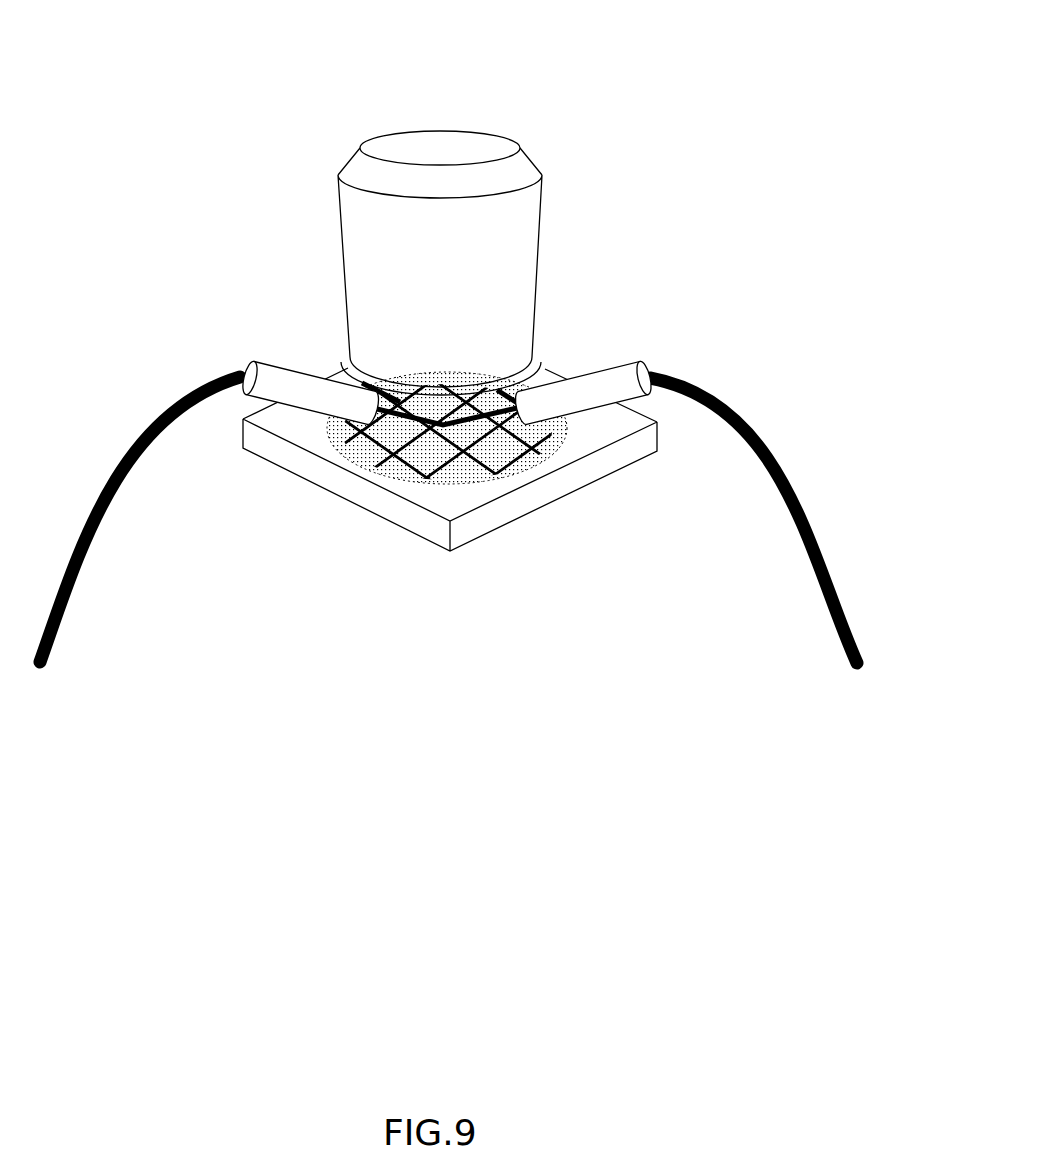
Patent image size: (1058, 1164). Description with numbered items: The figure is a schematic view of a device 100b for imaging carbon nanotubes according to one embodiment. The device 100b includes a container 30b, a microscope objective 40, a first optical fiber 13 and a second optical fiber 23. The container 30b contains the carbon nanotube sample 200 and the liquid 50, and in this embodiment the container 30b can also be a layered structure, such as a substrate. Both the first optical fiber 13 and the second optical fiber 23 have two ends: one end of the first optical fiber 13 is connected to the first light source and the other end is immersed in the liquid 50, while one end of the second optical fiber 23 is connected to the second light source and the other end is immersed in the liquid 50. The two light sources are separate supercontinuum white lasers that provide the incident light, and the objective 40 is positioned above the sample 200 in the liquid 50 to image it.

The device for imaging carbon nanotubes 100b is at (448, 338).
The objective 40 is at (513, 229).
The first optical fiber 13 is at (372, 390).
The second optical fiber 23 is at (522, 385).
The liquid 50 is at (407, 472).
The carbon nanotube sample 200 is at (458, 462).
The container 30b is at (578, 477).